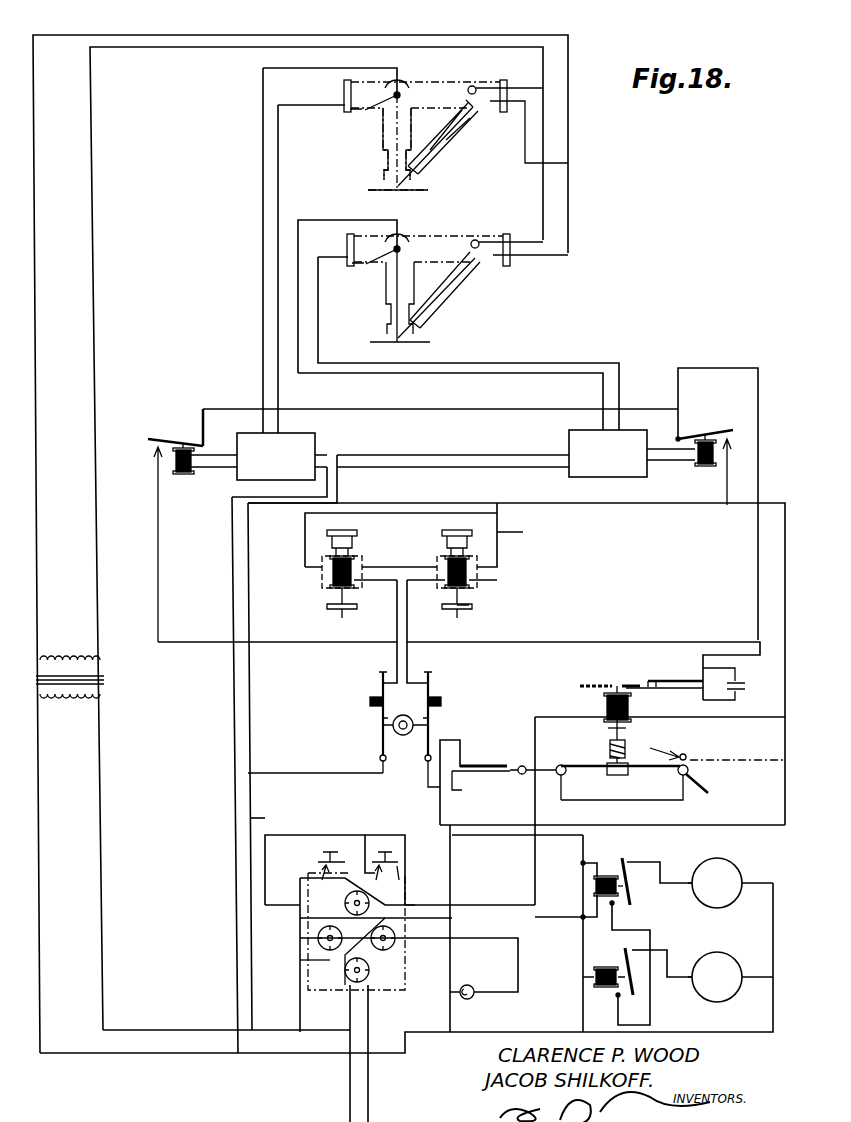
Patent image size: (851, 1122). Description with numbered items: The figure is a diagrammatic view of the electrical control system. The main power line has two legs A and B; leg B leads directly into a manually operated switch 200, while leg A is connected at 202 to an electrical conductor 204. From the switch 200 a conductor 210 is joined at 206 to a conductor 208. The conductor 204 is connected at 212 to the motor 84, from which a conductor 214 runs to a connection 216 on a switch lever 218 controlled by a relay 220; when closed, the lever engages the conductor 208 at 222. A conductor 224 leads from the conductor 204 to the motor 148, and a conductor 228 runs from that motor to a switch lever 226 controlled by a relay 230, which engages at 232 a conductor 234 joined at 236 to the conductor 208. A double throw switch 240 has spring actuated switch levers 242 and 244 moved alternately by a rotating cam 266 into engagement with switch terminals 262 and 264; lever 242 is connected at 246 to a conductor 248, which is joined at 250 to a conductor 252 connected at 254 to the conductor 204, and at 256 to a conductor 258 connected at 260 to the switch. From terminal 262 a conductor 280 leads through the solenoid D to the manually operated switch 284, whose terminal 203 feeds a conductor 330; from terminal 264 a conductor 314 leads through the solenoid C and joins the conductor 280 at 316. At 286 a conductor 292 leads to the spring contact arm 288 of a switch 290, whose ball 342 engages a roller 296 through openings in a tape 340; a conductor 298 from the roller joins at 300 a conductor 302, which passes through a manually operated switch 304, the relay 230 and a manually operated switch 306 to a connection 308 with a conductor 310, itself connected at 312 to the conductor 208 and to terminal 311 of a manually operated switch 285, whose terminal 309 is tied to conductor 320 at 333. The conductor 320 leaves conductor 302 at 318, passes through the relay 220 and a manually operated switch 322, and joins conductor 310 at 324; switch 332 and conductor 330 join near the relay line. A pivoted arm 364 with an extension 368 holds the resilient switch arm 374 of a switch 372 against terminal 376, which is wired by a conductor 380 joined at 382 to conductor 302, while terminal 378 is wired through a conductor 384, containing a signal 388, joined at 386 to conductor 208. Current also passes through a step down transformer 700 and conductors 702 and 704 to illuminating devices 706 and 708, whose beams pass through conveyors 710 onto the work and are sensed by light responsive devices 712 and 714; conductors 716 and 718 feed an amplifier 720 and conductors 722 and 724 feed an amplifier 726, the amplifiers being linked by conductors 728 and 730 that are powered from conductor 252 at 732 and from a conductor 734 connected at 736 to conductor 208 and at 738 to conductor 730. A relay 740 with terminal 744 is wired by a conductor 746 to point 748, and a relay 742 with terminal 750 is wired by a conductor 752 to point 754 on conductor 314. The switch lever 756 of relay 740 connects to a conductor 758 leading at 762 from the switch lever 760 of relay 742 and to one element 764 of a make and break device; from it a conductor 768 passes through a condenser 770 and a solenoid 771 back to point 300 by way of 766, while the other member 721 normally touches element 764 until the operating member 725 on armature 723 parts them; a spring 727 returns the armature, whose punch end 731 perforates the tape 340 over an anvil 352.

The step down transformer 700 is at (62, 672).
The conductor 702 is at (570, 185).
The conductor 704 is at (542, 185).
The illuminating device 706 is at (476, 88).
The illuminating device 708 is at (480, 240).
The conveyor 710 is at (447, 145).
The light responsive device 712 is at (382, 114).
The light responsive device 714 is at (384, 270).
The conductor 716 is at (262, 280).
The conductor 718 is at (280, 200).
The amplifier 720 is at (276, 456).
The member of make and break device 721 is at (690, 690).
The conductor 722 is at (300, 376).
The armature 723 is at (608, 690).
The conductor 724 is at (319, 335).
The operating member 725 is at (625, 674).
The amplifier 726 is at (608, 453).
The spring 727 is at (610, 734).
The conductor 728 is at (408, 453).
The conductor 730 is at (420, 469).
The lower end of armature 731 is at (609, 751).
The connection point 732 is at (340, 451).
The conductor 734 is at (232, 735).
The connection point 736 is at (238, 1014).
The connection point 738 is at (332, 442).
The relay 740 is at (183, 475).
The relay 742 is at (705, 468).
The terminal of relay 744 is at (155, 452).
The conductor 746 is at (170, 640).
The connection point 748 is at (397, 648).
The terminal of relay 750 is at (735, 445).
The conductor 752 is at (638, 640).
The connection point 754 is at (410, 641).
The switch lever of relay 756 is at (173, 437).
The conductor 758 is at (677, 415).
The switch lever of relay 760 is at (725, 428).
The connection point 762 is at (680, 408).
The element of make and break device 764 is at (672, 680).
The conductor 766 is at (703, 660).
The conductor 768 is at (535, 720).
The condenser 770 is at (746, 690).
The solenoid 771 is at (630, 710).
The motor 84 is at (730, 873).
The motor 148 is at (730, 968).
The manually operated switch 200 is at (345, 966).
The connection point 202 is at (350, 1050).
The terminal of switch 203 is at (398, 870).
The electrical conductor 204 is at (160, 1055).
The connection point 206 is at (348, 1026).
The conductor 208 is at (158, 1028).
The conductor 210 is at (348, 1002).
The connection point 212 is at (744, 878).
The conductor 214 is at (646, 863).
The connection point 216 is at (624, 858).
The switch lever 218 is at (632, 890).
The relay 220 is at (594, 885).
The engagement point 222 is at (613, 912).
The conductor 224 is at (748, 980).
The switch lever 226 is at (634, 990).
The conductor 228 is at (667, 956).
The relay 230 is at (592, 978).
The engagement point 232 is at (633, 987).
The conductor 234 is at (612, 1003).
The connection point 236 is at (610, 1022).
The double throw switch 240 is at (405, 715).
The switch lever 242 is at (381, 686).
The switch lever 244 is at (432, 683).
The connection point 246 is at (381, 771).
The conductor 248 is at (300, 775).
The connection point 250 is at (251, 771).
The conductor 252 is at (266, 818).
The connection point 254 is at (240, 1055).
The connection point 256 is at (426, 776).
The conductor 258 is at (428, 790).
The connection point 260 is at (406, 736).
The switch terminal 262 is at (381, 672).
The switch terminal 264 is at (410, 668).
The rotating cam 266 is at (442, 703).
The conductor 280 is at (372, 512).
The manually operated switch 284 is at (396, 855).
The manually operated switch 285 is at (313, 859).
The connection point 286 is at (381, 749).
The spring contact arm 288 is at (714, 759).
The switch 290 is at (658, 747).
The conductor 292 is at (783, 758).
The roller 296 is at (677, 772).
The conductor 298 is at (640, 801).
The connection point 300 is at (537, 806).
The conductor 302 is at (288, 903).
The manually operated switch 304 is at (344, 903).
The manually operated switch 306 is at (389, 950).
The connection point 308 is at (298, 960).
The terminal of switch 309 is at (372, 885).
The conductor 310 is at (298, 985).
The terminal of switch 311 is at (308, 862).
The connection point 312 is at (298, 1025).
The conductor 314 is at (512, 533).
The connection point 316 is at (498, 502).
The connection point 318 is at (582, 866).
The conductor 320 is at (597, 864).
The manually operated switch 322 is at (326, 932).
The connection point 324 is at (298, 938).
The conductor 330 is at (406, 888).
The conductor 332 is at (425, 896).
The connection point 333 is at (395, 920).
The tape 340 is at (584, 770).
The ball 342 is at (683, 754).
The anvil 352 is at (614, 777).
The arm 364 is at (558, 768).
The extension 368 is at (522, 776).
The switch 372 is at (483, 758).
The resilient switch arm 374 is at (463, 778).
The switch terminal 376 is at (522, 764).
The switch terminal 378 is at (492, 790).
The conductor 380 is at (449, 740).
The connection point 382 is at (439, 823).
The conductor 384 is at (465, 851).
The connection point 386 is at (452, 1028).
The signal 388 is at (473, 986).
The leg of power line A is at (349, 1105).
The leg of power line B is at (369, 1105).
The solenoid C is at (478, 578).
The solenoid D is at (324, 582).